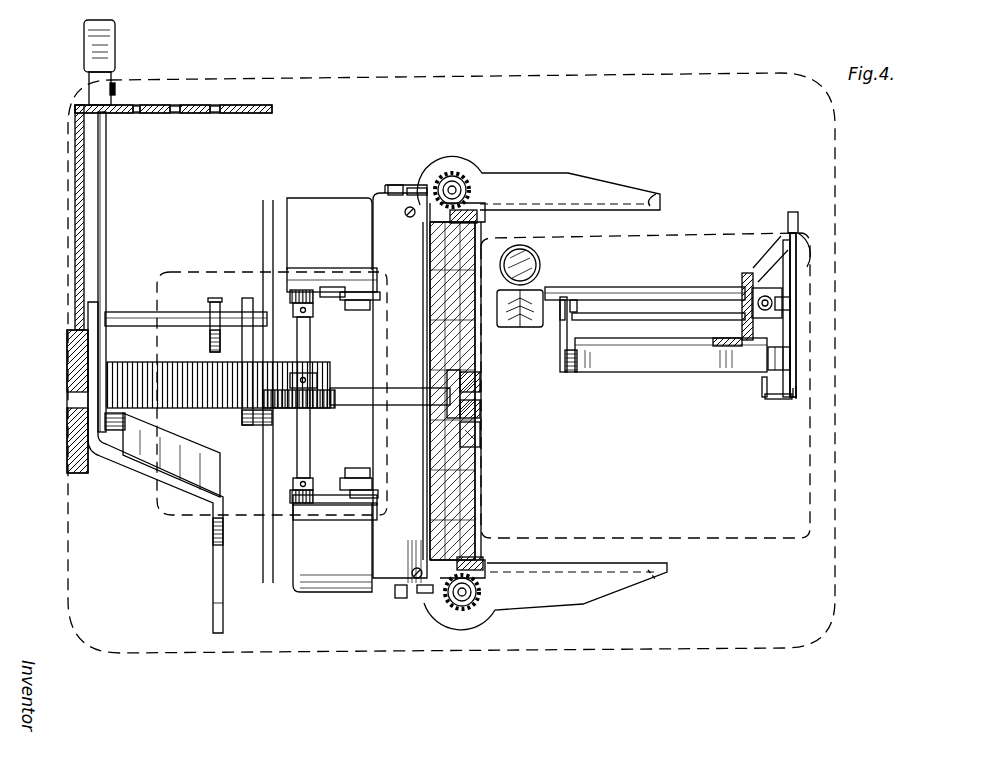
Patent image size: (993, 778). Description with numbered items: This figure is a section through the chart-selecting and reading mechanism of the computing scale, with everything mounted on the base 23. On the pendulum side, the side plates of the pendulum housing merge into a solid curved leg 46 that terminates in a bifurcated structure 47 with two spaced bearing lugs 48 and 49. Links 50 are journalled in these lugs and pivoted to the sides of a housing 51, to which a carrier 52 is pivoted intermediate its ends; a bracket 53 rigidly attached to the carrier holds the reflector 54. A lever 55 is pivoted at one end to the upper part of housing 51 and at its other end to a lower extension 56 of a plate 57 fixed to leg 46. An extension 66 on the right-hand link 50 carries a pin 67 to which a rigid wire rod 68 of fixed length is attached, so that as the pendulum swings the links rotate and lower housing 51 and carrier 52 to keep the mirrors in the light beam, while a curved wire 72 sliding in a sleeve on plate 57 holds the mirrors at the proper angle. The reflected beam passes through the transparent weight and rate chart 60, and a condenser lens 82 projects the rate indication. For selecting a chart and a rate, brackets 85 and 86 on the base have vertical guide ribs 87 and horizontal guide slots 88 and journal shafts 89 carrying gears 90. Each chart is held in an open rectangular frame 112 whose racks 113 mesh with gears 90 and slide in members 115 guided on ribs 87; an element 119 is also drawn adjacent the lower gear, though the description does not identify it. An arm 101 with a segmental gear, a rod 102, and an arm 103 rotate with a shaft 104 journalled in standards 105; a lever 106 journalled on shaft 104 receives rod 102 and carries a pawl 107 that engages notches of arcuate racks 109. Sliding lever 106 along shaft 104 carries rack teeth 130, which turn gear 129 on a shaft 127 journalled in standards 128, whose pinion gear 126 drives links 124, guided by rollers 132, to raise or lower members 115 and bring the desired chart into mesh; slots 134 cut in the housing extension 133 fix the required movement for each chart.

The base 23 is at (85, 590).
The curved leg 46 is at (745, 275).
The bifurcated structure 47 is at (700, 363).
The bearing lug 48 is at (775, 360).
The bearing lug 49 is at (570, 372).
The links 50 is at (563, 337).
The housing 51 is at (615, 316).
The carrier 52 is at (652, 290).
The bracket 53 is at (572, 294).
The reflector 54 is at (520, 327).
The lever 55 is at (790, 268).
The lower extension 56 is at (785, 235).
The plate 57 is at (795, 330).
The weight and rate chart 60 is at (462, 472).
The extension 66 is at (796, 393).
The pin 67 is at (782, 399).
The rigid wire rod 68 is at (763, 385).
The curved wire 72 is at (772, 303).
The condenser lens 82 is at (536, 265).
The bracket 85 is at (535, 590).
The bracket 86 is at (513, 182).
The vertical guide ribs 87 is at (397, 190).
The horizontal guide slots 88 is at (650, 202).
The shaft 89 is at (458, 188).
The gear 90 is at (452, 173).
The arm 101 is at (92, 318).
The rod 102 is at (128, 320).
The arm 103 is at (250, 322).
The shaft 104 is at (72, 405).
The standards 105 is at (88, 436).
The lever 106 is at (106, 184).
The pawl 107 is at (88, 86).
The arcuate racks 109 is at (222, 105).
The open rectangular frame 112 is at (505, 237).
The racks 113 is at (470, 210).
The members 115 is at (420, 190).
The cap 119 is at (487, 563).
The links 124 is at (335, 505).
The pinion gear 126 is at (300, 292).
The shaft 127 is at (306, 344).
The standards 128 is at (308, 208).
The gear 129 is at (293, 415).
The rack teeth 130 is at (180, 385).
The guiding rollers 132 is at (378, 300).
The housing extension 133 is at (77, 147).
The slots 134 is at (213, 114).